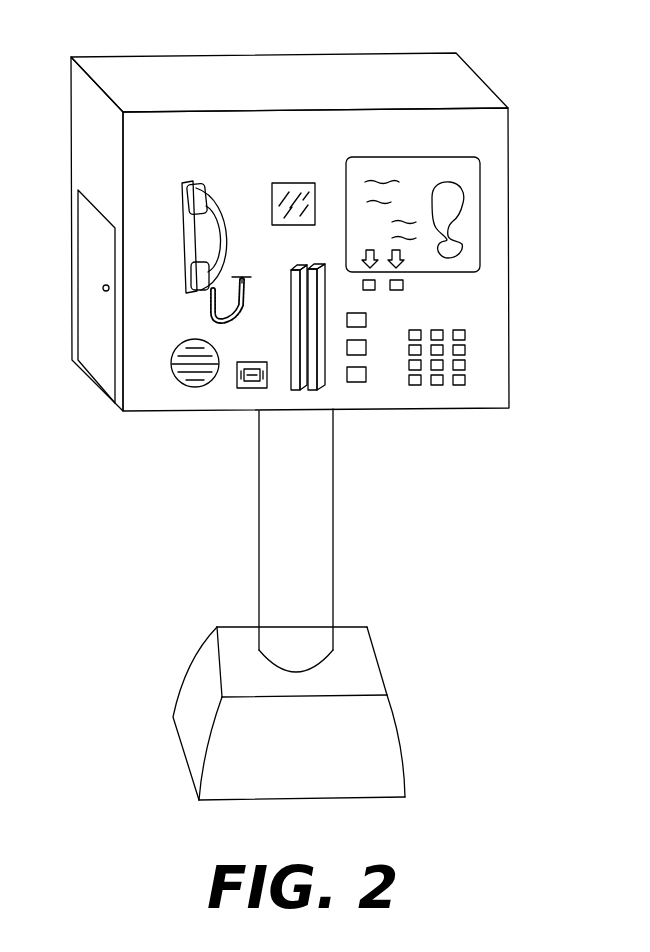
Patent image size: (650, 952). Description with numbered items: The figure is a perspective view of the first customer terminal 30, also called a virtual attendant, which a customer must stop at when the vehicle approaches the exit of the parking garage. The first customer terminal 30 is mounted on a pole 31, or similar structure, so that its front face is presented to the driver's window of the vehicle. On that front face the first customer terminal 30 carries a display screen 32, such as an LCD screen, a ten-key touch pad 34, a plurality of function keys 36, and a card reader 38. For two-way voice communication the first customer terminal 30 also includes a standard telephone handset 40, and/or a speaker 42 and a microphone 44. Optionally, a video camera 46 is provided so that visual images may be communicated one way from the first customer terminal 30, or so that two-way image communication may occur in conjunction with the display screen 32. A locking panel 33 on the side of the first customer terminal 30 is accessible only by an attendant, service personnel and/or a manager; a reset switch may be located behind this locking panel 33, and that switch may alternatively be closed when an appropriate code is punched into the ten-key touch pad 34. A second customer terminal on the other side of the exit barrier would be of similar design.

The first customer terminal 30 is at (517, 38).
The pole 31 is at (333, 494).
The display screen 32 is at (481, 177).
The locking panel 33 is at (98, 360).
The ten-key touch pad 34 is at (478, 339).
The function keys 36 is at (382, 292).
The card reader 38 is at (297, 265).
The telephone handset 40 is at (215, 190).
The speaker 42 is at (178, 345).
The microphone 44 is at (250, 362).
The video camera 46 is at (290, 183).